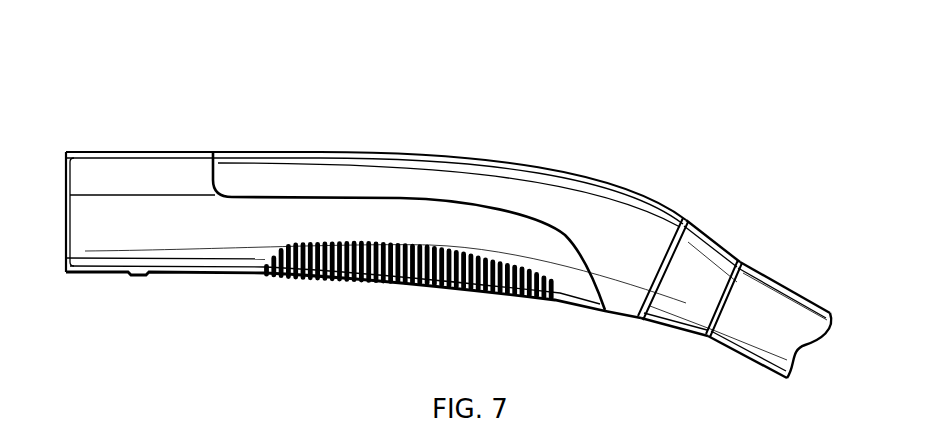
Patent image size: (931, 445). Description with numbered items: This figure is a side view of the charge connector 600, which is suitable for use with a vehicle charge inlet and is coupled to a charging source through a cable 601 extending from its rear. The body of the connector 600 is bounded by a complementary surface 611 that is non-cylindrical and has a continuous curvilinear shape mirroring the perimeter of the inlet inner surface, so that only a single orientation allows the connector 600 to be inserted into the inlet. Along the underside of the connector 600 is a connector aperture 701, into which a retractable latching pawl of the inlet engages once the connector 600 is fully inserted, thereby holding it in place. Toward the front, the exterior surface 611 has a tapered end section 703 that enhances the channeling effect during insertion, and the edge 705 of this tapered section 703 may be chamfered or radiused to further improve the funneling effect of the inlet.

The connector 600 is at (168, 102).
The cable 601 is at (766, 308).
The complementary surface 611 is at (119, 168).
The connector aperture 701 is at (137, 285).
The tapered end section 703 is at (65, 281).
The edge 705 is at (60, 150).